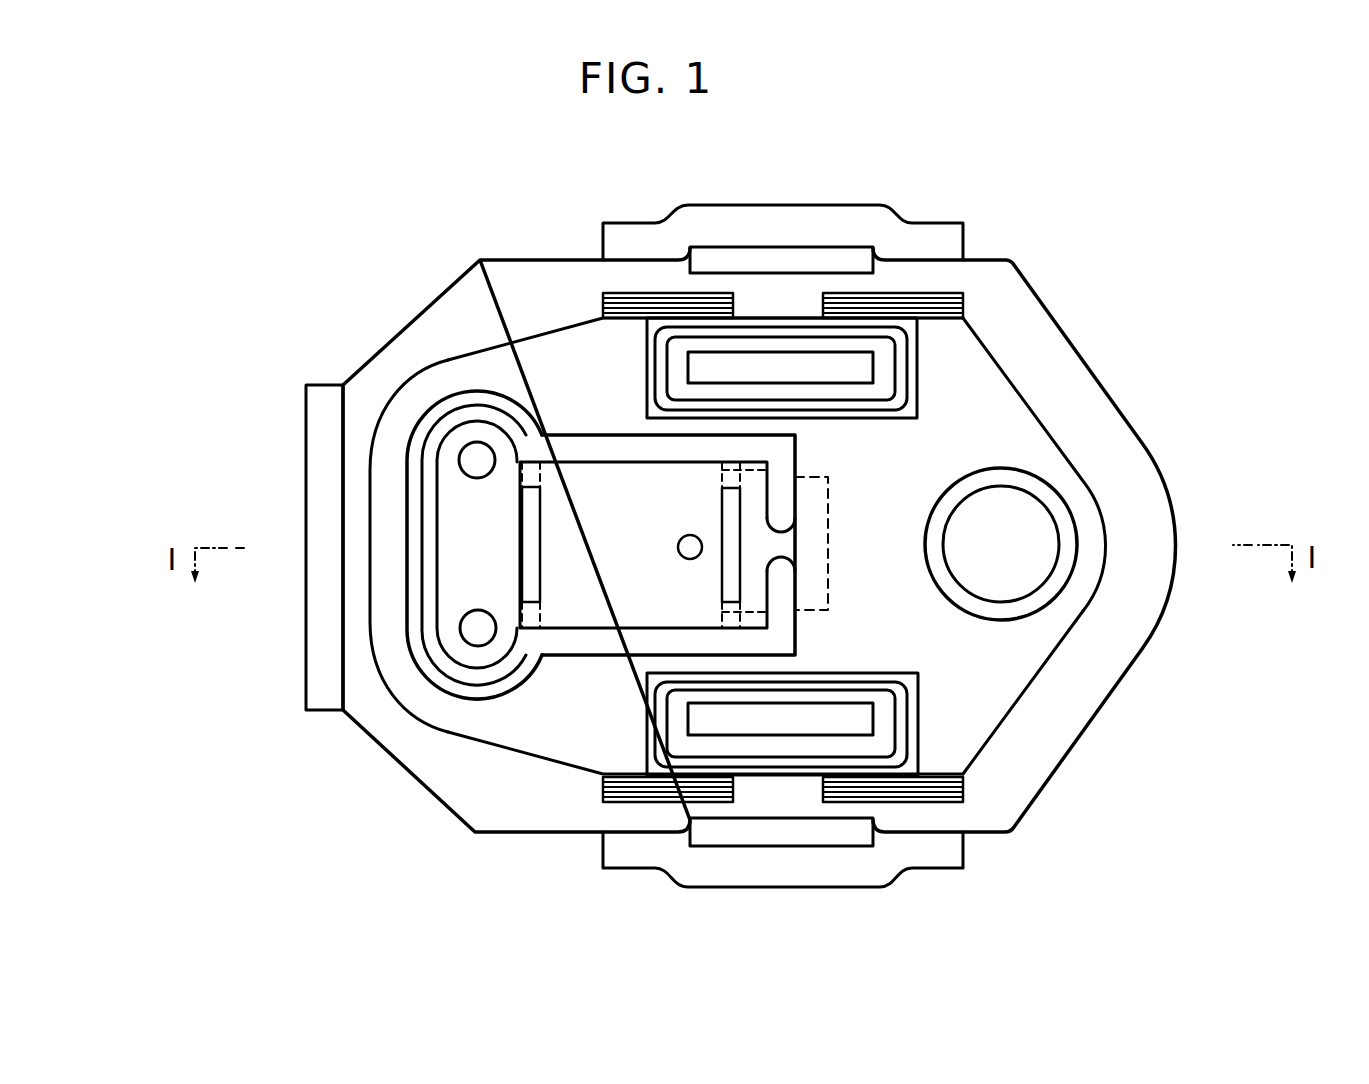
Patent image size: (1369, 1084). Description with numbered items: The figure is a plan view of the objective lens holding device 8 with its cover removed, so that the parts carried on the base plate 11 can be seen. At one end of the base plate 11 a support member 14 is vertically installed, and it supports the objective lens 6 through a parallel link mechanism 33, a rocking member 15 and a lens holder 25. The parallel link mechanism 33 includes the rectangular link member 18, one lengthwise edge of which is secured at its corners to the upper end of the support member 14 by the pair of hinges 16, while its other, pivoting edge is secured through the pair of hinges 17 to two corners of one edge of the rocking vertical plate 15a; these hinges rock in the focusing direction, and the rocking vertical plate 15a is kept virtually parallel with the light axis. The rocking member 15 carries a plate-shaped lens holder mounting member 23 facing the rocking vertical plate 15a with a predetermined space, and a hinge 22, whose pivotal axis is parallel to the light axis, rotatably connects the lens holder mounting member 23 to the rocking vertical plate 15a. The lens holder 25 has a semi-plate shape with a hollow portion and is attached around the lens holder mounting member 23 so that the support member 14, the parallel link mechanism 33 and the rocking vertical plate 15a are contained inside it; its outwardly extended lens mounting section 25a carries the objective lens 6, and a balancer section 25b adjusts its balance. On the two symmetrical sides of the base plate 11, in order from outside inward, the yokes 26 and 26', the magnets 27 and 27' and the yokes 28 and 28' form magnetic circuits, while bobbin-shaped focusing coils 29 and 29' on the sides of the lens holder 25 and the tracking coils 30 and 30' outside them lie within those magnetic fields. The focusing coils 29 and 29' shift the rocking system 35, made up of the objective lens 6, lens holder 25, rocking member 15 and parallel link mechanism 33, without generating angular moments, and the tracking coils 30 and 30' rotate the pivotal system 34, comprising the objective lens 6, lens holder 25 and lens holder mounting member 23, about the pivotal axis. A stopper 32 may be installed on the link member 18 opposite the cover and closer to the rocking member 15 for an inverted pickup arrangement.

The objective lens 6 is at (1038, 510).
The objective lens holding device 8 is at (367, 322).
The base plate 11 is at (437, 773).
The support member 14 is at (432, 662).
The rocking member 15 is at (748, 572).
The rocking vertical plate 15a is at (757, 520).
The hinges 16 is at (540, 474).
The hinges 17 is at (767, 470).
The link member 18 is at (635, 618).
The hinge 22 is at (780, 543).
The lens holder mounting member 23 is at (812, 587).
The lens holder 25 is at (1057, 652).
The lens mounting section 25a is at (1078, 583).
The balancer section 25b is at (392, 587).
The yoke 26 is at (783, 888).
The yoke 26' is at (783, 199).
The magnet 27 is at (806, 881).
The magnet 27' is at (781, 206).
The yoke 28 is at (780, 823).
The yoke 28' is at (827, 261).
The focusing coil 29 is at (885, 753).
The focusing coil 29' is at (890, 350).
The tracking coils 30 is at (805, 860).
The tracking coils 30' is at (839, 228).
The stopper 32 is at (682, 538).
The parallel link mechanism 33 is at (607, 460).
The pivotal system 34 is at (1025, 702).
The rocking system 35 is at (497, 357).